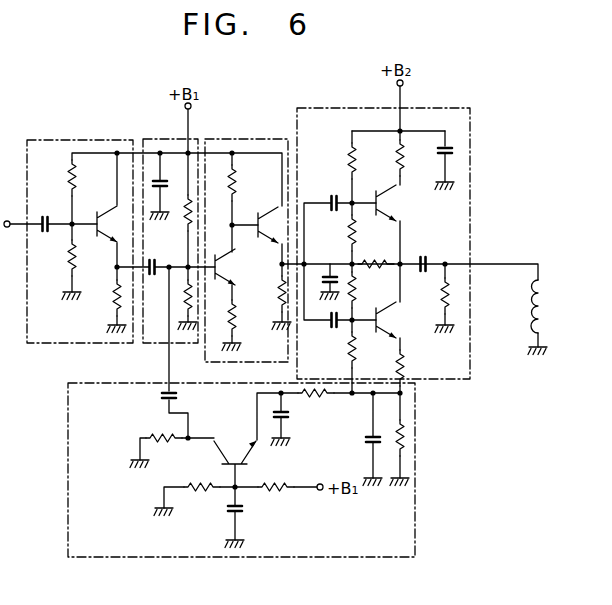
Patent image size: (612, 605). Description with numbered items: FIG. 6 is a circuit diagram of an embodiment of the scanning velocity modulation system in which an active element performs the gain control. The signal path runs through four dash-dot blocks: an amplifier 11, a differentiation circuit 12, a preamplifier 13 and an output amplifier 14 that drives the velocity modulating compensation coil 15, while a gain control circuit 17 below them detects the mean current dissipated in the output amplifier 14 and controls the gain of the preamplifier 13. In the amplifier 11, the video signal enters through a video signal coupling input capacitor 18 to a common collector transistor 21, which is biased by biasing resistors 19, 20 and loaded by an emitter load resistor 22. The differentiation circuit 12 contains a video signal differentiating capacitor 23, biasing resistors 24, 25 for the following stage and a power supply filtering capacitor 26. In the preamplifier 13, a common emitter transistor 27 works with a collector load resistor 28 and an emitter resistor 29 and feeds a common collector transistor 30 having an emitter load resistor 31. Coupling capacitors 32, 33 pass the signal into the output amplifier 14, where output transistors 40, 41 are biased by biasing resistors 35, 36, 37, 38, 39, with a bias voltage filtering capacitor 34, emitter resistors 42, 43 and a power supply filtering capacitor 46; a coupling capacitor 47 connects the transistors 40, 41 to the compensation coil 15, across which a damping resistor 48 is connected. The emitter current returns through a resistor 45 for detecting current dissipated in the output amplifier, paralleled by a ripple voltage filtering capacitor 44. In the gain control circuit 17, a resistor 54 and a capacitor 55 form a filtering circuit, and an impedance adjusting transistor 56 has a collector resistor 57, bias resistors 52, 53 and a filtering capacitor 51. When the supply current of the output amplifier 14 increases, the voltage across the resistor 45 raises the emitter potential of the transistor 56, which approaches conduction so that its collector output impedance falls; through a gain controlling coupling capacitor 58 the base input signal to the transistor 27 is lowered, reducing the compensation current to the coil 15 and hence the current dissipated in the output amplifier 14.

The amplifier 11 is at (86, 140).
The differentiation circuit 12 is at (170, 139).
The preamplifier 13 is at (250, 139).
The output amplifier 14 is at (322, 108).
The velocity modulating compensation coil 15 is at (532, 308).
The gain control circuit 17 is at (68, 457).
The video signal coupling input capacitor 18 is at (44, 218).
The biasing resistor 19 is at (70, 260).
The biasing resistor 20 is at (76, 178).
The common collector transistor 21 is at (105, 202).
The emitter load resistor 22 is at (114, 299).
The video signal differentiating capacitor 23 is at (153, 279).
The biasing resistor 24 is at (185, 219).
The biasing resistor 25 is at (185, 298).
The power supply filtering capacitor 26 is at (168, 192).
The common emitter transistor 27 is at (224, 268).
The collector load resistor 28 is at (236, 190).
The emitter resistor 29 is at (236, 319).
The common collector transistor 30 is at (260, 216).
The emitter load resistor 31 is at (278, 296).
The coupling capacitor 32 is at (334, 200).
The coupling capacitor 33 is at (332, 326).
The bias voltage filtering capacitor 34 is at (326, 276).
The biasing resistor 35 is at (355, 163).
The biasing resistor 36 is at (350, 233).
The biasing resistor 37 is at (355, 288).
The biasing resistor 38 is at (346, 356).
The biasing resistor 39 is at (377, 262).
The output transistor 40 is at (382, 206).
The output transistor 41 is at (382, 323).
The emitter resistor 42 is at (404, 140).
The emitter resistor 43 is at (402, 368).
The ripple voltage filtering capacitor 44 is at (368, 440).
The current detecting resistor 45 is at (405, 440).
The power supply filtering capacitor 46 is at (440, 152).
The coupling capacitor 47 is at (428, 246).
The damping resistor 48 is at (444, 294).
The filtering capacitor 51 is at (239, 514).
The bias resistor 52 is at (200, 490).
The bias resistor 53 is at (275, 492).
The resistor 54 is at (312, 396).
The capacitor 55 is at (288, 414).
The impedance adjusting transistor 56 is at (236, 454).
The collector resistor 57 is at (166, 442).
The gain controlling coupling capacitor 58 is at (161, 398).